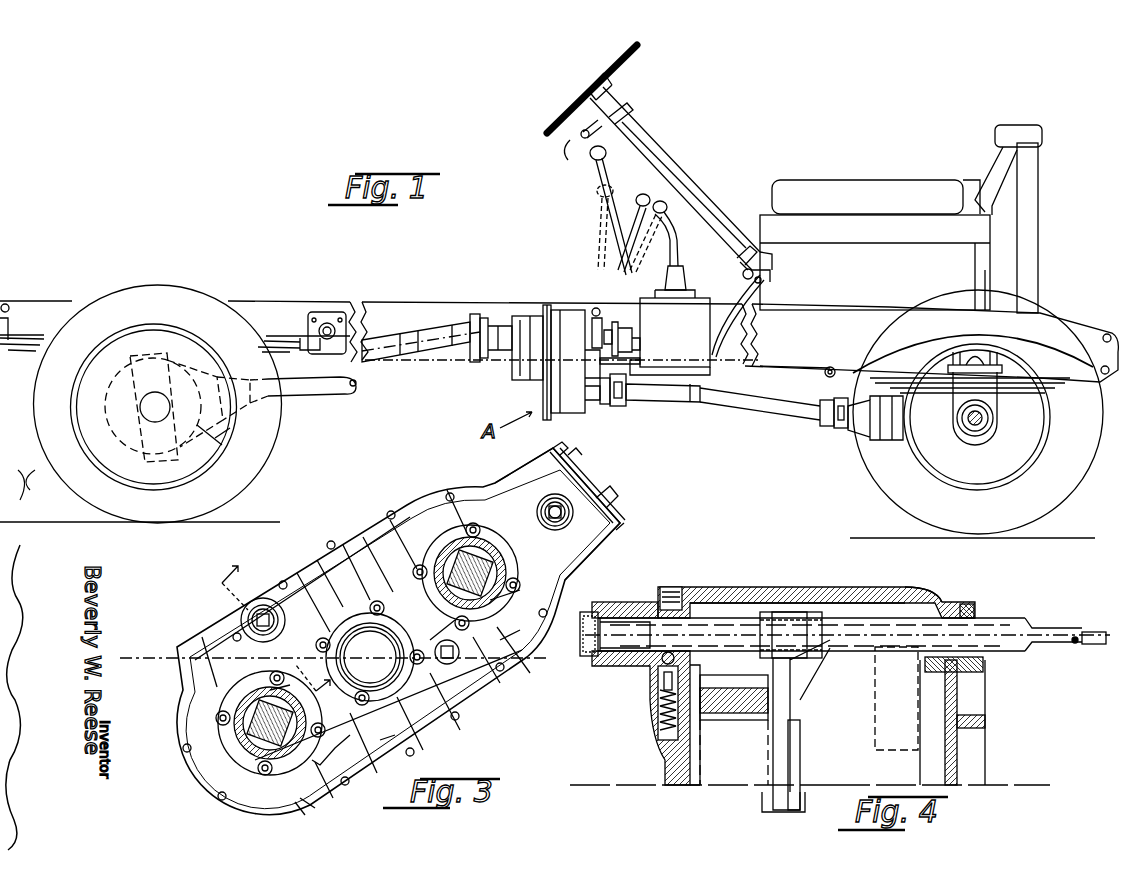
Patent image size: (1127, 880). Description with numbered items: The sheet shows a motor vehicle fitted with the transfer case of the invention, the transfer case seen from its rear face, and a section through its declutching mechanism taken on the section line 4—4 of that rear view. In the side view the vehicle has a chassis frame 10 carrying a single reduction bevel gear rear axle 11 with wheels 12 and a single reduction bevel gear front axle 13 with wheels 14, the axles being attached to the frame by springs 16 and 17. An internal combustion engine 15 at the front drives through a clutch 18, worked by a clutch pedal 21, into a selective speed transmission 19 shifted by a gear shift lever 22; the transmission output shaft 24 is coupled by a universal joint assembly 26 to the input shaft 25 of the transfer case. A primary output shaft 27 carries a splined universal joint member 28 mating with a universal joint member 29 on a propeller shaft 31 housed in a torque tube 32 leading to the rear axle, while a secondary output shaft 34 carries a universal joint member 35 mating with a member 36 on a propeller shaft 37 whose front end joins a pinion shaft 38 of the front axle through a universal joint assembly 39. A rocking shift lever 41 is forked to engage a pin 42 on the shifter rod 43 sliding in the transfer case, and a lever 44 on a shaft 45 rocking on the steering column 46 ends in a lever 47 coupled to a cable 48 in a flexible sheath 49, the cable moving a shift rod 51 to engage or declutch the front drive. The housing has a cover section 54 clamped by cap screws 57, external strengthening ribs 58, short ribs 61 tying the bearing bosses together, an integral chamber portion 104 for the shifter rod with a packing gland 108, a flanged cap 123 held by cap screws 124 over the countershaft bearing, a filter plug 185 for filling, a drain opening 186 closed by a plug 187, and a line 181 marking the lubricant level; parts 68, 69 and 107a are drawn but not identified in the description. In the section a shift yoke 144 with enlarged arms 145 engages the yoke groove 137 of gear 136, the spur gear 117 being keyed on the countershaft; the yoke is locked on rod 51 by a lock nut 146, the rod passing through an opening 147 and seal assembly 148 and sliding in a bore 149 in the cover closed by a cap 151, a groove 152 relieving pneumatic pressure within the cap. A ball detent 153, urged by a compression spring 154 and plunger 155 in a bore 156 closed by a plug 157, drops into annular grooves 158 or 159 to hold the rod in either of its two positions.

In FIG. 1, the chassis frame 10 is at (362, 300).
In FIG. 1, the rear axle 11 is at (224, 437).
In FIG. 1, the wheels 12 is at (268, 428).
In FIG. 1, the front axle 13 is at (1034, 452).
In FIG. 1, the wheels 14 is at (1060, 500).
In FIG. 1, the internal combustion engine 15 is at (832, 180).
In FIG. 1, the springs 16 is at (1065, 384).
In FIG. 1, the springs 17 is at (278, 318).
In FIG. 1, the clutch 18 is at (776, 370).
In FIG. 1, the selective speed transmission 19 is at (712, 408).
In FIG. 1, the clutch pedal 21 is at (700, 228).
In FIG. 1, the gear shift lever 22 is at (606, 170).
In FIG. 1, the output shaft 24 is at (640, 318).
In FIG. 1, the input shaft 25 is at (594, 308).
In FIG. 3, the input shaft 25 is at (478, 548).
In FIG. 1, the universal joint assembly 26 is at (640, 344).
In FIG. 3, the universal joint assembly 26 is at (440, 545).
In FIG. 1, the primary output shaft 27 is at (528, 360).
In FIG. 1, the universal joint member 28 is at (503, 352).
In FIG. 1, the mating universal joint member 29 is at (478, 350).
In FIG. 1, the propeller shaft 31 is at (407, 350).
In FIG. 1, the torque tube 32 is at (352, 390).
In FIG. 1, the secondary output shaft 34 is at (598, 402).
In FIG. 3, the secondary output shaft 34 is at (300, 744).
In FIG. 1, the universal joint member 35 is at (610, 406).
In FIG. 3, the universal joint member 35 is at (268, 705).
In FIG. 1, the mating universal joint member 36 is at (624, 398).
In FIG. 1, the propeller shaft 37 is at (690, 403).
In FIG. 1, the pinion shaft 38 is at (838, 428).
In FIG. 1, the universal joint assembly 39 is at (828, 428).
In FIG. 1, the shift lever 41 is at (610, 252).
In FIG. 1, the pin 42 is at (592, 320).
In FIG. 1, the shifter rod 43 is at (604, 340).
In FIG. 3, the shifter rod 43 is at (553, 500).
In FIG. 1, the lever 44 is at (575, 142).
In FIG. 1, the shaft 45 is at (680, 172).
In FIG. 1, the steering column 46 is at (664, 140).
In FIG. 1, the lever 47 is at (765, 278).
In FIG. 1, the cable 48 is at (752, 304).
In FIG. 4, the cable 48 is at (1092, 630).
In FIG. 1, the flexible sheath 49 is at (728, 295).
In FIG. 1, the shift rod 51 is at (600, 368).
In FIG. 3, the shift rod 51 is at (250, 614).
In FIG. 4, the shift rod 51 is at (590, 660).
In FIG. 4, the cover section 54 is at (680, 782).
In FIG. 3, the cap screws 57 is at (210, 790).
In FIG. 3, the strengthening flanges or ribs 58 is at (180, 712).
In FIG. 4, the strengthening flanges or ribs 58 is at (790, 581).
In FIG. 3, the short ribs 61 is at (300, 650).
In FIG. 4, the short ribs 61 is at (985, 722).
In FIG. 1, the shaft 68 is at (628, 322).
In FIG. 3, the shaft 68 is at (462, 552).
In FIG. 3, the bolt 69 is at (440, 608).
In FIG. 3, the integral chamber portion 104 is at (545, 468).
In FIG. 3, the lug 107a is at (562, 442).
In FIG. 3, the packing gland 108 is at (565, 525).
In FIG. 4, the spur gear 117 is at (896, 735).
In FIG. 3, the flanged cap 123 is at (385, 669).
In FIG. 3, the cap screws 124 is at (382, 628).
In FIG. 4, the gear 136 is at (735, 760).
In FIG. 4, the yoke groove 137 is at (800, 728).
In FIG. 4, the shift yoke 144 is at (790, 700).
In FIG. 4, the enlarged arms 145 is at (800, 778).
In FIG. 4, the lock nut 146 is at (760, 614).
In FIG. 4, the opening 147 is at (938, 600).
In FIG. 4, the seal assembly 148 is at (975, 608).
In FIG. 4, the bore 149 is at (618, 600).
In FIG. 4, the cap 151 is at (586, 660).
In FIG. 4, the groove 152 is at (640, 596).
In FIG. 4, the ball detent 153 is at (662, 675).
In FIG. 4, the compression spring 154 is at (660, 714).
In FIG. 4, the plunger 155 is at (658, 700).
In FIG. 4, the bore 156 is at (680, 656).
In FIG. 4, the plug 157 is at (670, 590).
In FIG. 4, the annular groove 158 is at (690, 623).
In FIG. 4, the annular groove 159 is at (612, 630).
In FIG. 3, the lubricant level line 181 is at (131, 660).
In FIG. 3, the filter plug 185 is at (445, 642).
In FIG. 3, the opening 186 is at (315, 806).
In FIG. 3, the plug 187 is at (306, 810).
In FIG. 3, the section line 4 is at (272, 637).